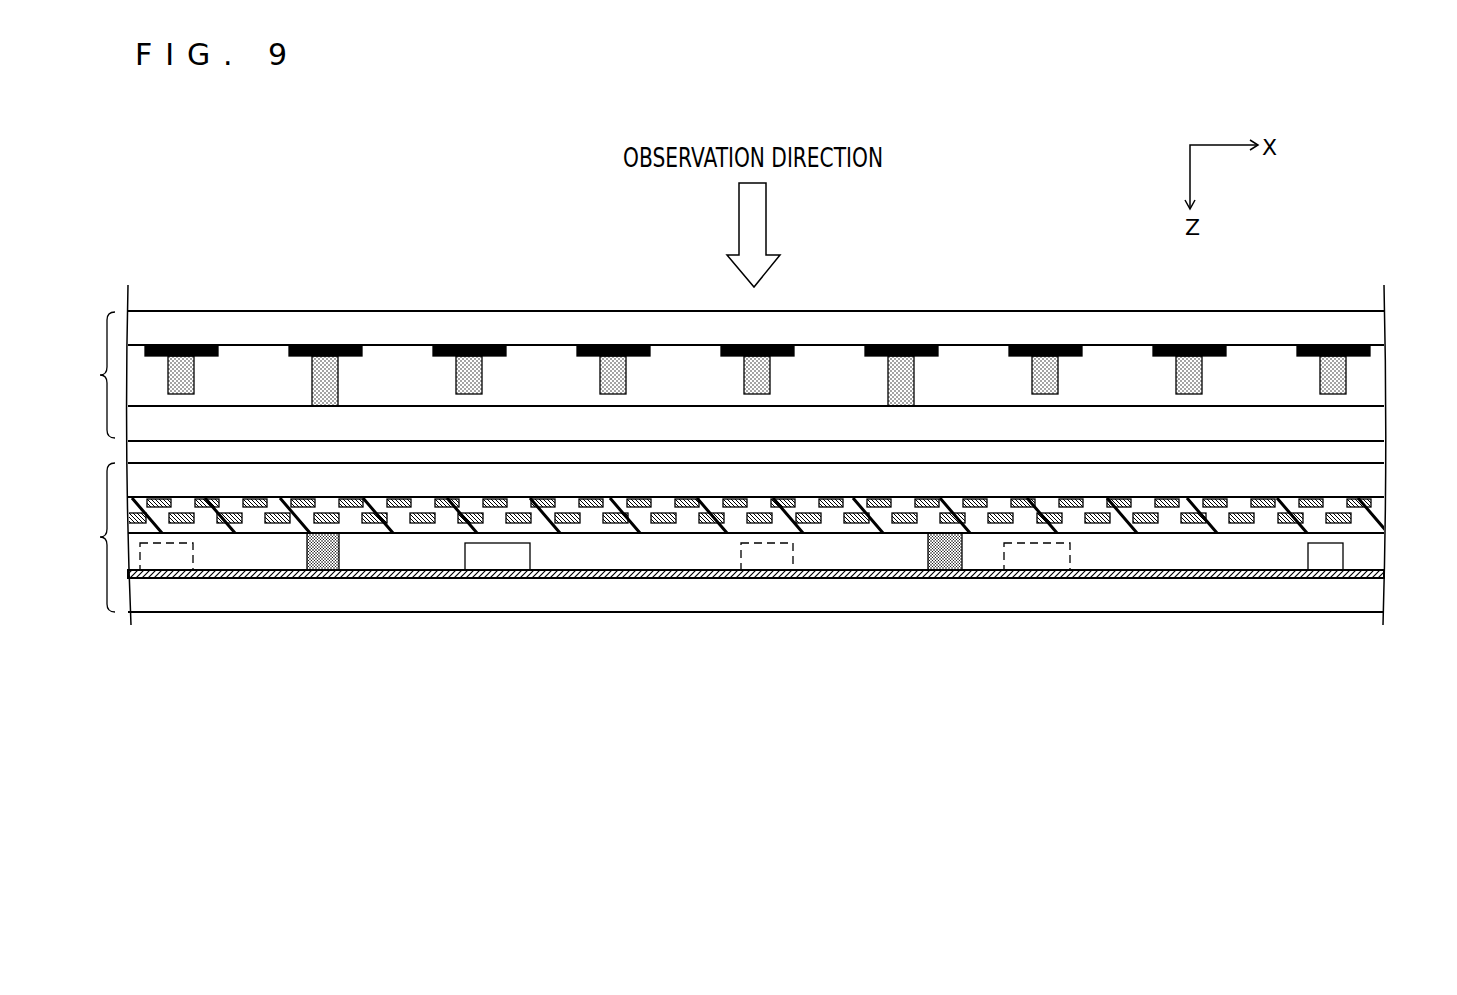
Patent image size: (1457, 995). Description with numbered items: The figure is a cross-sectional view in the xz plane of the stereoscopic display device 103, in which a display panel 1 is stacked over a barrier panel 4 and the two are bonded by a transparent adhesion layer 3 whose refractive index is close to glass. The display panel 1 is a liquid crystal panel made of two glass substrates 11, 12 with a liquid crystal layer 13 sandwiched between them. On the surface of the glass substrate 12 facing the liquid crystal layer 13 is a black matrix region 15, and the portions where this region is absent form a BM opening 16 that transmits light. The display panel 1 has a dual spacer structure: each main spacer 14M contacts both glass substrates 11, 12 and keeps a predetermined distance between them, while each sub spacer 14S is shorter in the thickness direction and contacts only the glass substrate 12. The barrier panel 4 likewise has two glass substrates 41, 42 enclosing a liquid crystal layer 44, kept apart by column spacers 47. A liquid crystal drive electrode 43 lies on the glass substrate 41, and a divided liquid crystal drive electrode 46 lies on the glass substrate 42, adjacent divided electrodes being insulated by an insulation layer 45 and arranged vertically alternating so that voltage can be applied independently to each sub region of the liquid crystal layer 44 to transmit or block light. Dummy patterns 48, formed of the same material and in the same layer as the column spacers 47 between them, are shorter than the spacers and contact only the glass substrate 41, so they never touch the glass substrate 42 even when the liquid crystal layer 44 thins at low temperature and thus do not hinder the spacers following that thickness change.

The stereoscopic display device 103 is at (335, 200).
The display panel 1 is at (95, 375).
The barrier panel 4 is at (94, 537).
The glass substrate 12 is at (1378, 328).
The BM opening 16 is at (539, 342).
The black matrix region 15 is at (618, 343).
The liquid crystal layer 13 is at (1378, 375).
The sub spacer 14S is at (743, 376).
The main spacer 14M is at (312, 385).
The glass substrate 11 is at (1378, 420).
The transparent adhesion layer 3 is at (1378, 455).
The glass substrate 42 is at (1378, 485).
The liquid crystal drive electrode 46 is at (1368, 520).
The liquid crystal layer 44 is at (1112, 548).
The insulation layer 45 is at (1263, 520).
The column spacer 47 is at (307, 555).
The dummy pattern 48 is at (500, 558).
The liquid crystal drive electrode 43 is at (1378, 572).
The glass substrate 41 is at (1378, 600).